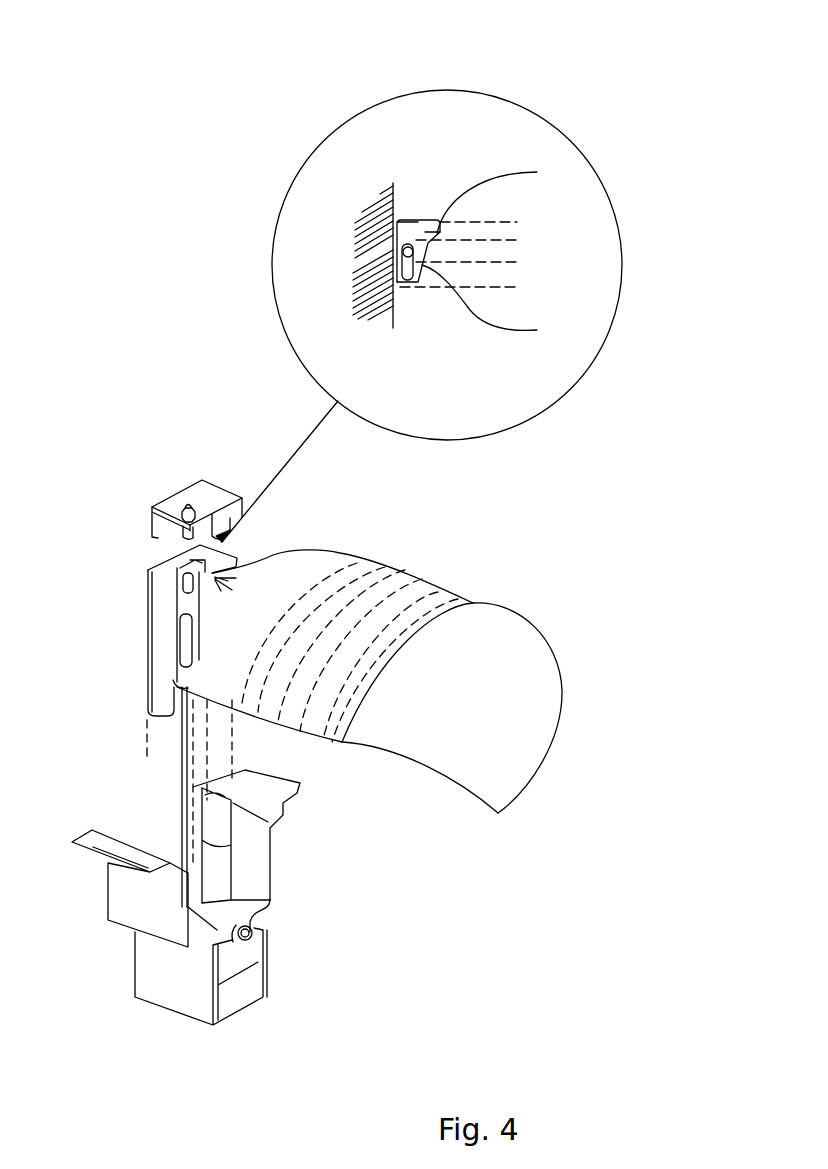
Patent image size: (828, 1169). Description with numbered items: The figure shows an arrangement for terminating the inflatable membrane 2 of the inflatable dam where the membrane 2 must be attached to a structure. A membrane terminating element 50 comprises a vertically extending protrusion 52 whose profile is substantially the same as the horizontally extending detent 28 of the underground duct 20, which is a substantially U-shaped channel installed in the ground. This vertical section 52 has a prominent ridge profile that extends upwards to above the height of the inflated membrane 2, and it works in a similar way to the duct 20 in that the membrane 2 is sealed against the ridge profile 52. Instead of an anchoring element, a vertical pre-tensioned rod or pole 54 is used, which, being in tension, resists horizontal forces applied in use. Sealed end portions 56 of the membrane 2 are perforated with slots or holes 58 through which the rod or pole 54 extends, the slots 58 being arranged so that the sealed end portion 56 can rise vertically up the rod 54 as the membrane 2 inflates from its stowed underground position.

The membrane 2 is at (512, 183).
The duct 20 is at (267, 955).
The detent 28 is at (262, 920).
The membrane terminating element 50 is at (110, 552).
The vertically extending protrusion 52 is at (436, 231).
The rod or pole 54 is at (185, 753).
The sealed end portion 56 is at (178, 606).
The slots or holes 58 is at (183, 670).